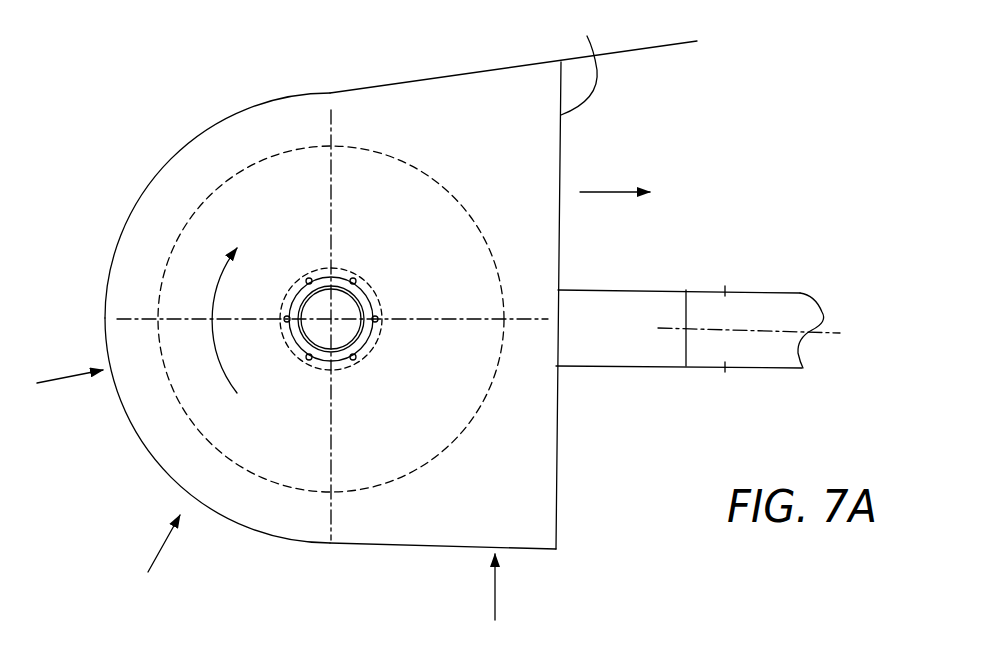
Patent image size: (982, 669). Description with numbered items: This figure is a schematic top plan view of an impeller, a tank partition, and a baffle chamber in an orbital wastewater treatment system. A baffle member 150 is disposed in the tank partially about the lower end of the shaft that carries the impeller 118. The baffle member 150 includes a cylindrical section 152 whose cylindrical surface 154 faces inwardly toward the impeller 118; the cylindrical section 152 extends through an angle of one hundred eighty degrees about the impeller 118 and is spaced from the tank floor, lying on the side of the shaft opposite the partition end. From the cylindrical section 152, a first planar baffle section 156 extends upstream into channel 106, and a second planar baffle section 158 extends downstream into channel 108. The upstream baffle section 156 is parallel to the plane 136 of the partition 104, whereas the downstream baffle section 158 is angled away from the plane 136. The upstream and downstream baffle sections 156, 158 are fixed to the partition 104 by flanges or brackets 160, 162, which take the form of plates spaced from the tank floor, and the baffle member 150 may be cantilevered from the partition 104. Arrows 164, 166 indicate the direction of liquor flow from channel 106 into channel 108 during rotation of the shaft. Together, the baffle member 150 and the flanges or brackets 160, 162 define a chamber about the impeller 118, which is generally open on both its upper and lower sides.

The partition 104 is at (622, 302).
The channel 106 is at (682, 432).
The channel 108 is at (705, 132).
The impeller 118 is at (135, 318).
The plane of partition 136 is at (750, 333).
The baffle member 150 is at (372, 302).
The cylindrical section 152 is at (150, 457).
The cylindrical surface 154 is at (112, 249).
The first planar baffle section 156 is at (383, 548).
The second planar baffle section 158 is at (428, 79).
The flange or bracket 160 is at (556, 468).
The flange or bracket 162 is at (585, 63).
The arrow 164 is at (157, 554).
The arrow 166 is at (600, 190).